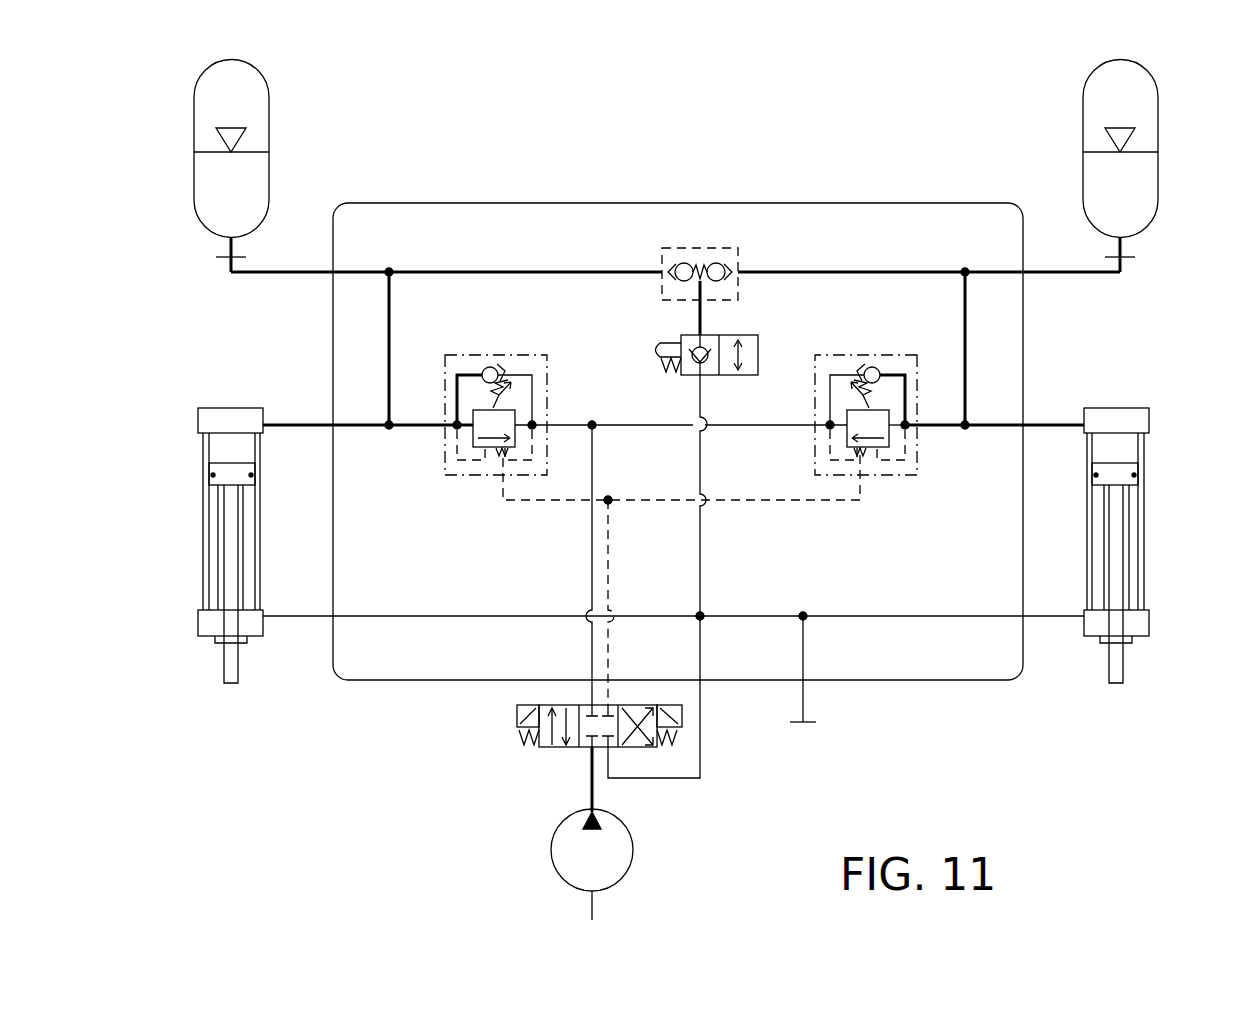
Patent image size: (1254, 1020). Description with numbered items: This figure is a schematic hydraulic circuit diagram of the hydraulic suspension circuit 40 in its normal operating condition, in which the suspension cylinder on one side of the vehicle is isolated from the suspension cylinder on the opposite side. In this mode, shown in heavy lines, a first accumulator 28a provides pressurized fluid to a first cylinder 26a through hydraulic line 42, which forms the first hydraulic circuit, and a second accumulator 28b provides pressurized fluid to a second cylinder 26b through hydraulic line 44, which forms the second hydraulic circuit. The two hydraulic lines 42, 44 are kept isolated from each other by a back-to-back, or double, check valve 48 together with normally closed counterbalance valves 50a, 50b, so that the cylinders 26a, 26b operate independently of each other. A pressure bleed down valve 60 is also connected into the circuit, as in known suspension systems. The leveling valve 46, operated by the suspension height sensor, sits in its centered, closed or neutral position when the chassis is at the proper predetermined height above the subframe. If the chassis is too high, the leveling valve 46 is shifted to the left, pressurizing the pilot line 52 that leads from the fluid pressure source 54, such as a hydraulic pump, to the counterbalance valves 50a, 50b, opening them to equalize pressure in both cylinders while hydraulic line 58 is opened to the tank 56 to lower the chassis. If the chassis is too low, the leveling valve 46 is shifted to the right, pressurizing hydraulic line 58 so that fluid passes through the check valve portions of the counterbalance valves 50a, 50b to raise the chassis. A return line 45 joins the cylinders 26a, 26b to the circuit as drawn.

The circuit 40 is at (892, 122).
The first accumulator 28a is at (270, 116).
The second accumulator 28b is at (1160, 116).
The hydraulic line 42 is at (290, 268).
The hydraulic line 44 is at (1042, 268).
The double check valve 48 is at (690, 248).
The pressure bleed down valve 60 is at (748, 335).
The counterbalance valve 50a is at (512, 357).
The counterbalance valve 50b is at (847, 355).
The hydraulic line 58 is at (614, 420).
The pilot line 52 is at (530, 505).
The return line 45 is at (418, 614).
The first cylinder 26a is at (205, 450).
The second cylinder 26b is at (1152, 452).
The leveling valve 46 is at (517, 716).
The tank 56 is at (838, 744).
The pressure source 54 is at (549, 850).